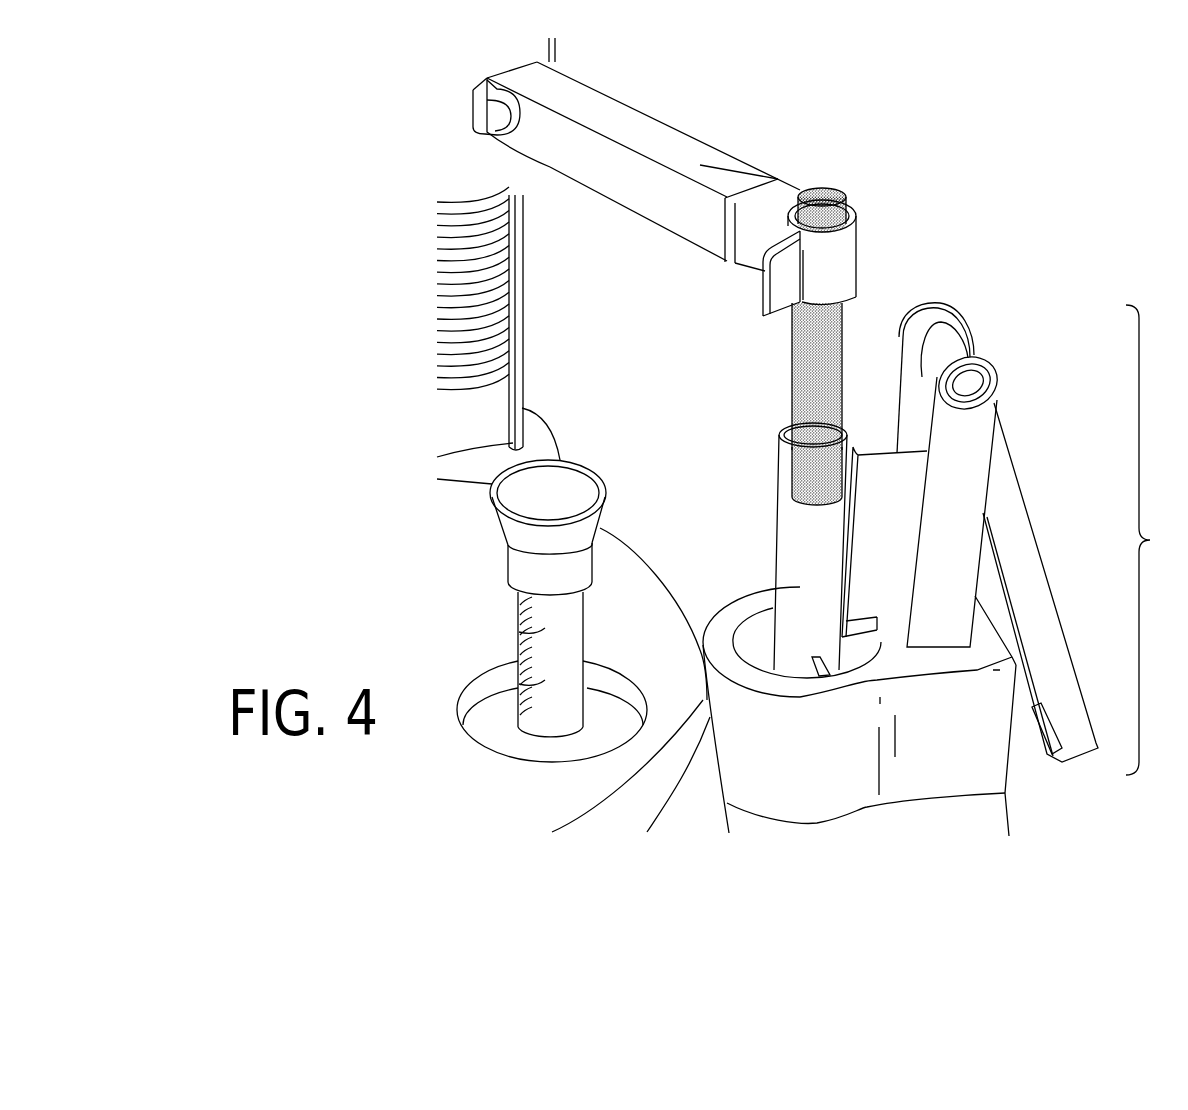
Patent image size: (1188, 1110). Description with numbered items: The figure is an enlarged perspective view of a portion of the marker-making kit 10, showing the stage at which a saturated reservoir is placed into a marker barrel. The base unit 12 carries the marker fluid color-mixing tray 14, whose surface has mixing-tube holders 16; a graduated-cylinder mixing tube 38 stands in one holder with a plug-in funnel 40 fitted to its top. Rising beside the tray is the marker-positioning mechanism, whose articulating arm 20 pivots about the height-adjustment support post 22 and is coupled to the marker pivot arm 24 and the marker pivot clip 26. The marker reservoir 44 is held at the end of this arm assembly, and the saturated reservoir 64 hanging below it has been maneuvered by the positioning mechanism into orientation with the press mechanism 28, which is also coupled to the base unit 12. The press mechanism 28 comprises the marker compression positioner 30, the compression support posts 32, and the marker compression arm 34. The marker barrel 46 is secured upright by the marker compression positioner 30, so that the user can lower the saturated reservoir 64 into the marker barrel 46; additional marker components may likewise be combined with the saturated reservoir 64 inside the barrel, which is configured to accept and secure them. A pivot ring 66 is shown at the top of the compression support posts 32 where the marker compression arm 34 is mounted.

The marker-making kit 10 is at (283, 97).
The base unit 12 is at (712, 773).
The marker fluid color-mixing tray 14 is at (652, 578).
The mixing-tube holders 16 is at (480, 690).
The articulating arm 20 is at (520, 170).
The height-adjustment support post 22 is at (490, 294).
The marker pivot arm 24 is at (650, 128).
The marker pivot clip 26 is at (843, 242).
The press mechanism 28 is at (1153, 540).
The marker compression positioner 30 is at (758, 628).
The compression support posts 32 is at (975, 440).
The marker compression arm 34 is at (1015, 535).
The graduated-cylinder mixing tube 38 is at (575, 620).
The plug-in funnel 40 is at (597, 470).
The marker reservoir 44 is at (828, 190).
The marker barrel 46 is at (782, 517).
The saturated reservoir 64 is at (800, 343).
The pivot ring 66 is at (973, 383).